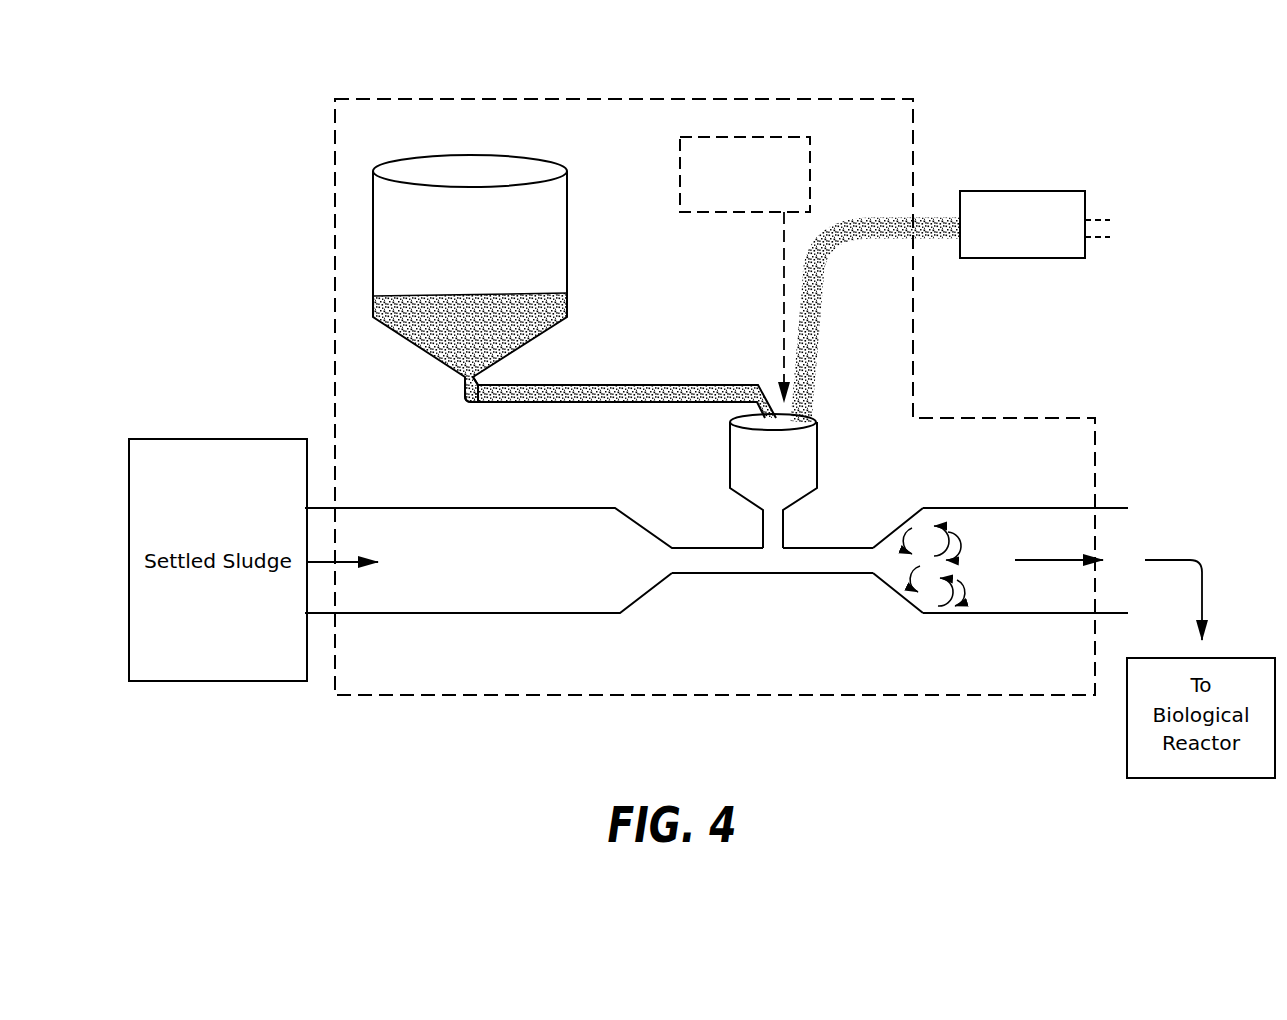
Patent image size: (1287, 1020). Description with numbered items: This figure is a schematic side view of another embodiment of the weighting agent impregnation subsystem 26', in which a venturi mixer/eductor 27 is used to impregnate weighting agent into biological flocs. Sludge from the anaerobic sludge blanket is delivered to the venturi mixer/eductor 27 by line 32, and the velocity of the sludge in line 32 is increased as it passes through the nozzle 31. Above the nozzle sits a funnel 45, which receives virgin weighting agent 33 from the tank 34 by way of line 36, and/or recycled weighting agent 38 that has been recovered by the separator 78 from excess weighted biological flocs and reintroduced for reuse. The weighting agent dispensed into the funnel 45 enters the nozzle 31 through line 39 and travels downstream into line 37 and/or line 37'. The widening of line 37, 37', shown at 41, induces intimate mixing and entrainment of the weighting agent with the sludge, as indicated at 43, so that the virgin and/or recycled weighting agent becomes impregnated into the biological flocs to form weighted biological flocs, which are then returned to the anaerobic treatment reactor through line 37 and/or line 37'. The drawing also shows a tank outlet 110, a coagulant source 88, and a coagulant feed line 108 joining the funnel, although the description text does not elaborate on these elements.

The weighting agent impregnation subsystem 26' is at (715, 397).
The tank 34 is at (448, 246).
The virgin weighting agent 33 is at (568, 313).
The tank outlet 110 is at (438, 380).
The line 36 is at (672, 386).
The coagulant source 88 is at (731, 204).
The coagulant feed line 108 is at (783, 250).
The recycled weighting agent 38 is at (822, 274).
The separator 78 is at (1008, 257).
The funnel 45 is at (759, 483).
The venturi mixer/eductor 27 is at (810, 481).
The line 39 is at (758, 529).
The line 32 is at (440, 507).
The nozzle 31 is at (774, 592).
The widening 41 is at (885, 541).
The line 37 is at (1025, 532).
The line 37' is at (1025, 532).
The mixing and entrainment 43 is at (962, 546).